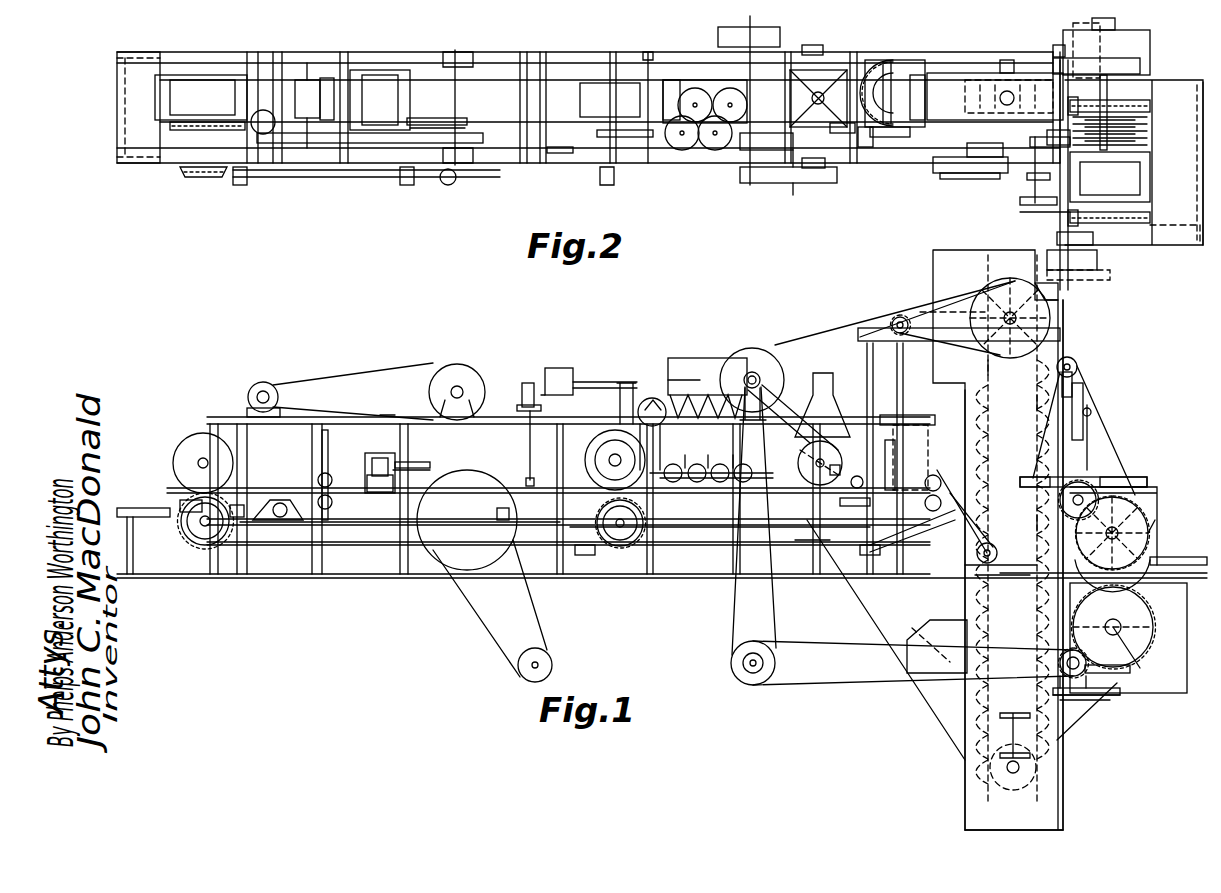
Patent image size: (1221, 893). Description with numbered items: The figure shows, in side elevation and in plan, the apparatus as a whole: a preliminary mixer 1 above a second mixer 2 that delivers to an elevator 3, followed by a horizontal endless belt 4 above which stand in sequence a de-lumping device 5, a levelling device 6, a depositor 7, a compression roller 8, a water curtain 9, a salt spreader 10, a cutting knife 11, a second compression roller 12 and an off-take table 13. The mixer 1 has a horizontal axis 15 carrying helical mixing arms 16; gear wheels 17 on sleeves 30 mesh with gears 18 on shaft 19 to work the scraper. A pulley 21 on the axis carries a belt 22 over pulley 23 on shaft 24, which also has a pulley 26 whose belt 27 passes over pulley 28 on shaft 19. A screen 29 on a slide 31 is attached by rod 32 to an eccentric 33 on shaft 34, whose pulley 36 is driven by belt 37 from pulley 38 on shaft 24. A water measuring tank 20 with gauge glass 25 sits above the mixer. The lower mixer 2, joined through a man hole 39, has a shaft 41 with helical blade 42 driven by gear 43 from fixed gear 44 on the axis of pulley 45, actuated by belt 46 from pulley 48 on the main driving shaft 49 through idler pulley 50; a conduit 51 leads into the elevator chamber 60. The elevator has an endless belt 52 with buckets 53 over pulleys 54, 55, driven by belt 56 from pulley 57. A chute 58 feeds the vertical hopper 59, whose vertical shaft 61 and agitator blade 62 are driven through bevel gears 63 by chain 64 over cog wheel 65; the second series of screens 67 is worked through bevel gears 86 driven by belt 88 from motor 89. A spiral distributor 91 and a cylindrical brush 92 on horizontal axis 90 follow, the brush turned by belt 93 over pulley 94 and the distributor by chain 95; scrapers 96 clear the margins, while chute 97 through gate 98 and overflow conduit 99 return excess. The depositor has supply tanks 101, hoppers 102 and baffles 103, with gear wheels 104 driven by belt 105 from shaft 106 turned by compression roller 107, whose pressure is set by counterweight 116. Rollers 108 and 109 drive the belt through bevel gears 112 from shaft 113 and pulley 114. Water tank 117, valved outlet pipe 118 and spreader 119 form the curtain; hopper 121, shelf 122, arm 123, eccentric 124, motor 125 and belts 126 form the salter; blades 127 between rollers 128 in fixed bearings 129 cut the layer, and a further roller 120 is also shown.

In FIG. 1, the preliminary mixer 1 is at (1157, 510).
In FIG. 1, the second mixer 2 is at (1150, 627).
In FIG. 1, the elevator 3 is at (960, 760).
In FIG. 1, the horizontal endless belt 4 is at (268, 497).
In FIG. 1, the de-lumping device 5 is at (835, 402).
In FIG. 1, the levelling device 6 is at (838, 464).
In FIG. 1, the depositor 7 is at (680, 360).
In FIG. 1, the compression roller 8 is at (588, 465).
In FIG. 1, the water curtain 9 is at (530, 380).
In FIG. 1, the salt spreader 10 is at (388, 416).
In FIG. 1, the cutting knife 11 is at (327, 472).
In FIG. 2, the second compression roller 12 is at (184, 75).
In FIG. 1, the second compression roller 12 is at (185, 440).
In FIG. 2, the off-take table 13 is at (117, 105).
In FIG. 1, the off-take table 13 is at (140, 508).
In FIG. 2, the horizontal axis 15 is at (1112, 90).
In FIG. 1, the horizontal axis 15 is at (1148, 533).
In FIG. 2, the mixing arms 16 is at (1148, 127).
In FIG. 1, the mixing arms 16 is at (1157, 520).
In FIG. 2, the gear wheels 17 is at (1150, 107).
In FIG. 1, the gear wheels 17 is at (770, 560).
In FIG. 2, the gears 18 is at (1072, 104).
In FIG. 1, the gears 18 is at (1002, 568).
In FIG. 2, the shaft 19 is at (1060, 212).
In FIG. 1, the shaft 19 is at (1003, 565).
In FIG. 1, the water measuring tank 20 is at (1085, 400).
In FIG. 2, the pulley 21 is at (1150, 58).
In FIG. 2, the belt 22 is at (1094, 48).
In FIG. 1, the belt 22 is at (1100, 440).
In FIG. 2, the pulley 23 is at (1053, 63).
In FIG. 1, the pulley 23 is at (1072, 360).
In FIG. 2, the shaft 24 is at (1053, 50).
In FIG. 1, the shaft 24 is at (1078, 367).
In FIG. 1, the gauge glass 25 is at (1090, 420).
In FIG. 2, the pulley 26 is at (1060, 238).
In FIG. 1, the pulley 26 is at (1045, 370).
In FIG. 1, the belt 27 is at (1092, 450).
In FIG. 1, the pulley 28 is at (1088, 486).
In FIG. 2, the screen 29 is at (1152, 182).
In FIG. 1, the screen 29 is at (1120, 476).
In FIG. 2, the sleeves 30 is at (1110, 178).
In FIG. 1, the sleeves 30 is at (1103, 566).
In FIG. 2, the slide 31 is at (1152, 160).
In FIG. 1, the slide 31 is at (1147, 480).
In FIG. 2, the rod 32 is at (1038, 182).
In FIG. 2, the eccentric 33 is at (1020, 201).
In FIG. 1, the eccentric 33 is at (1035, 490).
In FIG. 2, the shaft 34 is at (1027, 177).
In FIG. 2, the pulley 36 is at (1035, 147).
In FIG. 1, the pulley 36 is at (1045, 478).
In FIG. 2, the belt 37 is at (1057, 146).
In FIG. 1, the belt 37 is at (1035, 405).
In FIG. 2, the pulley 38 is at (1120, 150).
In FIG. 1, the man hole 39 is at (1187, 588).
In FIG. 1, the shaft 41 is at (1142, 668).
In FIG. 1, the helical blade 42 is at (1140, 666).
In FIG. 2, the gear 43 is at (1170, 245).
In FIG. 1, the gear 43 is at (1115, 690).
In FIG. 1, the fixed gear 44 is at (1078, 722).
In FIG. 2, the pulley 45 is at (1090, 260).
In FIG. 1, the pulley 45 is at (1047, 650).
In FIG. 1, the belt 46 is at (853, 680).
In FIG. 2, the pulley 48 is at (780, 40).
In FIG. 1, the pulley 48 is at (768, 360).
In FIG. 2, the main driving shaft 49 is at (790, 112).
In FIG. 1, the main driving shaft 49 is at (749, 368).
In FIG. 1, the idler pulley 50 is at (755, 686).
In FIG. 1, the conduit 51 is at (1057, 735).
In FIG. 1, the endless belt 52 is at (1035, 520).
In FIG. 1, the buckets 53 is at (1035, 425).
In FIG. 1, the pulley 54 is at (1014, 811).
In FIG. 1, the pulley 55 is at (991, 365).
In FIG. 2, the belt 56 is at (897, 137).
In FIG. 1, the belt 56 is at (912, 310).
In FIG. 2, the pulley 57 is at (748, 150).
In FIG. 2, the chute 58 is at (930, 92).
In FIG. 1, the chute 58 is at (925, 450).
In FIG. 2, the vertical hopper 59 is at (872, 147).
In FIG. 1, the vertical hopper 59 is at (905, 418).
In FIG. 1, the elevator chamber 60 is at (1040, 775).
In FIG. 1, the vertical shaft 61 is at (900, 385).
In FIG. 1, the agitator blade 62 is at (883, 465).
In FIG. 2, the bevel gears 63 is at (888, 62).
In FIG. 1, the bevel gears 63 is at (892, 320).
In FIG. 2, the chain 64 is at (965, 73).
In FIG. 1, the chain 64 is at (990, 300).
In FIG. 2, the cog wheel 65 is at (1005, 60).
In FIG. 2, the second series of screens 67 is at (970, 151).
In FIG. 2, the bevel gears 86 is at (905, 75).
In FIG. 2, the belt 88 is at (945, 173).
In FIG. 1, the belt 88 is at (920, 535).
In FIG. 2, the motor 89 is at (965, 179).
In FIG. 1, the motor 89 is at (997, 550).
In FIG. 1, the horizontal axis 90 is at (825, 440).
In FIG. 2, the spiral blade or distributor 91 is at (847, 90).
In FIG. 1, the spiral blade or distributor 91 is at (845, 506).
In FIG. 1, the cylindrical brush 92 is at (790, 510).
In FIG. 2, the belt 93 is at (793, 195).
In FIG. 1, the belt 93 is at (798, 412).
In FIG. 2, the pulley 94 is at (755, 183).
In FIG. 1, the pulley 94 is at (790, 395).
In FIG. 2, the chain 95 is at (840, 133).
In FIG. 1, the chain 95 is at (856, 475).
In FIG. 2, the scrapers 96 is at (818, 168).
In FIG. 1, the scrapers 96 is at (810, 540).
In FIG. 1, the chute 97 is at (855, 590).
In FIG. 1, the gate 98 is at (905, 630).
In FIG. 1, the overflow conduit 99 is at (934, 475).
In FIG. 2, the supply tanks 101 is at (712, 150).
In FIG. 1, the supply tanks 101 is at (667, 380).
In FIG. 1, the hoppers 102 is at (678, 463).
In FIG. 2, the baffles 103 is at (715, 80).
In FIG. 1, the baffles 103 is at (712, 485).
In FIG. 1, the gear wheels 104 is at (722, 463).
In FIG. 1, the belt 105 is at (675, 460).
In FIG. 2, the shaft 106 is at (650, 55).
In FIG. 1, the shaft 106 is at (650, 400).
In FIG. 2, the compression roller 107 is at (592, 100).
In FIG. 1, the compression roller 107 is at (592, 437).
In FIG. 1, the roller 108 is at (615, 548).
In FIG. 1, the roller 109 is at (195, 548).
In FIG. 2, the bevel gears 112 is at (230, 182).
In FIG. 1, the bevel gears 112 is at (223, 550).
In FIG. 2, the shaft 113 is at (385, 178).
In FIG. 1, the shaft 113 is at (375, 524).
In FIG. 1, the pulley 114 is at (447, 562).
In FIG. 2, the counterweight 116 is at (563, 147).
In FIG. 1, the counterweight 116 is at (560, 368).
In FIG. 1, the water tank 117 is at (522, 395).
In FIG. 1, the valved outlet pipe 118 is at (528, 446).
In FIG. 1, the spreader 119 is at (526, 481).
In FIG. 1, the roller 120 is at (317, 478).
In FIG. 2, the hopper 121 is at (400, 75).
In FIG. 1, the hopper 121 is at (370, 455).
In FIG. 2, the shelf 122 is at (375, 85).
In FIG. 1, the shelf 122 is at (365, 480).
In FIG. 2, the arm 123 is at (415, 116).
In FIG. 1, the arm 123 is at (420, 462).
In FIG. 2, the eccentric 124 is at (440, 126).
In FIG. 1, the eccentric 124 is at (432, 470).
In FIG. 2, the motor 125 is at (255, 124).
In FIG. 1, the motor 125 is at (268, 382).
In FIG. 2, the belts 126 is at (470, 133).
In FIG. 1, the belts 126 is at (440, 365).
In FIG. 2, the blades 127 is at (328, 85).
In FIG. 2, the rollers 128 is at (305, 80).
In FIG. 2, the fixed bearings 129 is at (305, 178).
In FIG. 1, the fixed bearings 129 is at (318, 500).